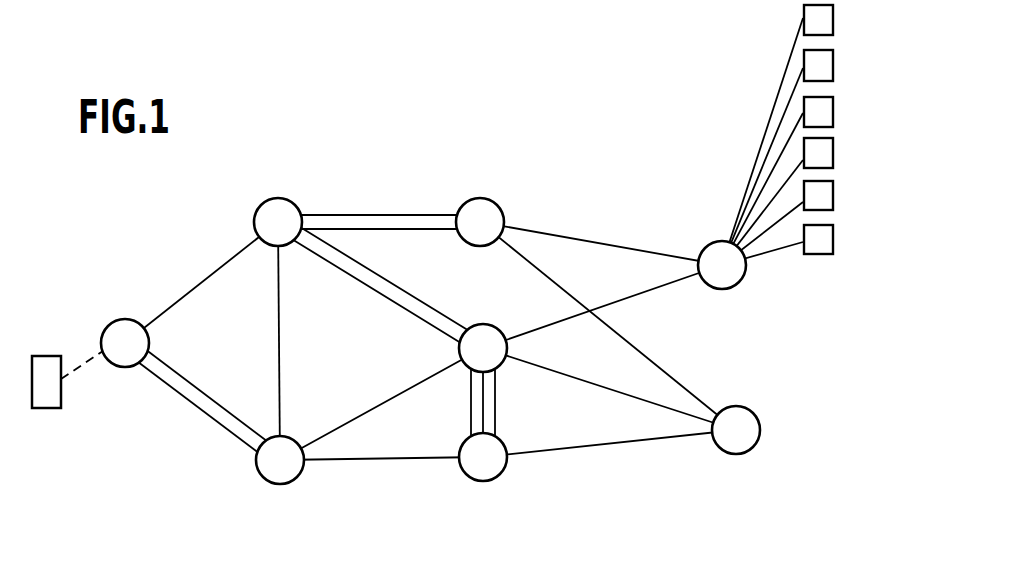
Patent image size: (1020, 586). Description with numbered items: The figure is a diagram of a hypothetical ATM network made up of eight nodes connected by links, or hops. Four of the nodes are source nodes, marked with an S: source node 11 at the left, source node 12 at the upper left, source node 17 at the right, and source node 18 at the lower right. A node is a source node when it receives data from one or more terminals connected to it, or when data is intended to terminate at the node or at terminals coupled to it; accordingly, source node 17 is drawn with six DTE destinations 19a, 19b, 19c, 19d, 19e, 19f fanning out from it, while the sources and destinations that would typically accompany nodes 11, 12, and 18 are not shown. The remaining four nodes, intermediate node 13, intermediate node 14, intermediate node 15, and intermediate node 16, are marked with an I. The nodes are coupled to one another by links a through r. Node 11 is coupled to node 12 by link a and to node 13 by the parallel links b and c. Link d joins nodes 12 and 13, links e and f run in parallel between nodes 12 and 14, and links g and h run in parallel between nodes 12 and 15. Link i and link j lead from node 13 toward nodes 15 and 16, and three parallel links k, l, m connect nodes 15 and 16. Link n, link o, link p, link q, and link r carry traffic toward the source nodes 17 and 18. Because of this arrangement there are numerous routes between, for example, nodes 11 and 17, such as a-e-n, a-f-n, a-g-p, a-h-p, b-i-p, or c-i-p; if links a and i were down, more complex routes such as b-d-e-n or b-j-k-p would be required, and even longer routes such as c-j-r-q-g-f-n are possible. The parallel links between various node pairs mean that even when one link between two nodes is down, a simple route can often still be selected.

The source node 11 is at (152, 334).
The source node 12 is at (270, 198).
The intermediate node 13 is at (284, 484).
The intermediate node 14 is at (470, 200).
The intermediate node 15 is at (480, 325).
The intermediate node 16 is at (492, 480).
The source node 17 is at (738, 285).
The source node 18 is at (748, 452).
The DTE destination 19a is at (834, 22).
The DTE destination 19b is at (834, 68).
The DTE destination 19c is at (834, 112).
The DTE destination 19d is at (834, 153).
The DTE destination 19e is at (834, 195).
The DTE destination 19f is at (834, 240).
The link a is at (213, 258).
The link b is at (178, 400).
The link c is at (198, 386).
The link d is at (281, 330).
The link e is at (408, 211).
The link f is at (408, 228).
The link g is at (410, 288).
The link h is at (338, 275).
The link i is at (375, 404).
The link j is at (418, 465).
The link k is at (470, 418).
The link l is at (486, 398).
The link m is at (497, 418).
The link n is at (592, 233).
The link o is at (575, 290).
The link p is at (683, 292).
The link q is at (605, 390).
The link r is at (640, 448).